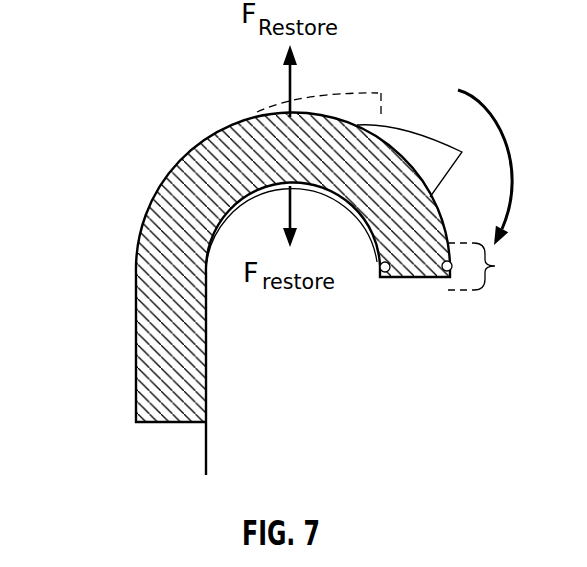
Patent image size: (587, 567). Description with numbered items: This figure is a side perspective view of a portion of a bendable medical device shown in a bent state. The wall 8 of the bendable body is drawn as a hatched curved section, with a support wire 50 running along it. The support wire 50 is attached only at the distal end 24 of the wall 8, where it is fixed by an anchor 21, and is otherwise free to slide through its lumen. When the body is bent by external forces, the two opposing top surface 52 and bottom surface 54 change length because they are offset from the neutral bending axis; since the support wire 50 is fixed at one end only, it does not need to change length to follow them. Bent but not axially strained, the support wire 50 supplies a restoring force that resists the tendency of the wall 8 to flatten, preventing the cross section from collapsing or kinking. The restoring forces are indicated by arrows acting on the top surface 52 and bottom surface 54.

The wall 8 is at (342, 143).
The anchor 21 is at (388, 275).
The distal end 24 is at (490, 266).
The support wire 50 is at (206, 472).
The top surface 52 is at (203, 145).
The bottom surface 54 is at (338, 192).